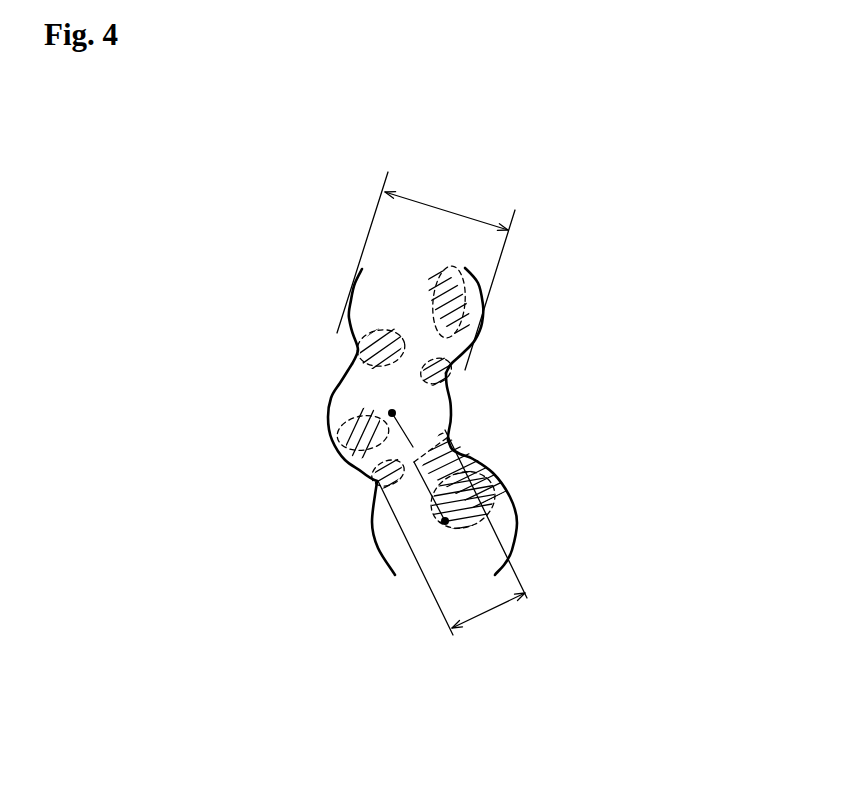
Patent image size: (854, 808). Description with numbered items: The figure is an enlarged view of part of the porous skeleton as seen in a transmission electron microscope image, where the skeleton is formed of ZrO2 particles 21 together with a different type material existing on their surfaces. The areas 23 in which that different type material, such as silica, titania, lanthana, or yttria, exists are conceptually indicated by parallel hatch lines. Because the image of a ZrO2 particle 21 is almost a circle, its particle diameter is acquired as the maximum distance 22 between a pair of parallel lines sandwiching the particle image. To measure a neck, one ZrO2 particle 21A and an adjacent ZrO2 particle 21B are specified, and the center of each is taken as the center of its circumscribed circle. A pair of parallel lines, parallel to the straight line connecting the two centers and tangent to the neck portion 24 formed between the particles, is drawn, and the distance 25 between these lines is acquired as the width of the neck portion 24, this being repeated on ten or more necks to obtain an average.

The ZrO2 particle 21 is at (355, 290).
The ZrO2 particle 21A is at (340, 405).
The another ZrO2 particle 21B is at (387, 543).
The maximum distance 22 is at (448, 208).
The areas in which the different type material exists 23 is at (463, 302).
The neck portion 24 is at (472, 437).
The distance 25 is at (488, 612).